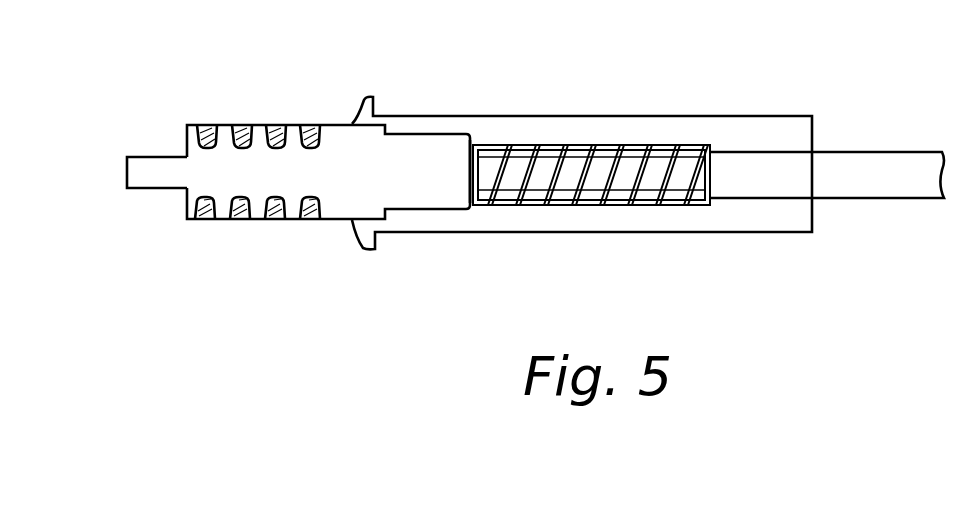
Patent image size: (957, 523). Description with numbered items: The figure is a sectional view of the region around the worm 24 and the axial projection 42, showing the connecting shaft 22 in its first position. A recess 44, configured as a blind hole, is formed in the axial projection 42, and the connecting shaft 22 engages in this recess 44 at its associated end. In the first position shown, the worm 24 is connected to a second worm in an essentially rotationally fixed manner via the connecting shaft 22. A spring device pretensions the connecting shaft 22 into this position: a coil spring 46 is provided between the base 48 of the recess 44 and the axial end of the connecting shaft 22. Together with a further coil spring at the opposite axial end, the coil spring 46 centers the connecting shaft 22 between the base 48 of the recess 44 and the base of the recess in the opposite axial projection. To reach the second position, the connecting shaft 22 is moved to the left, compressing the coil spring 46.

The connecting shaft 22 is at (878, 172).
The worm 24 is at (250, 118).
The axial projection 42 is at (413, 116).
The recess 44 is at (746, 148).
The coil spring 46 is at (610, 145).
The base 48 is at (469, 160).